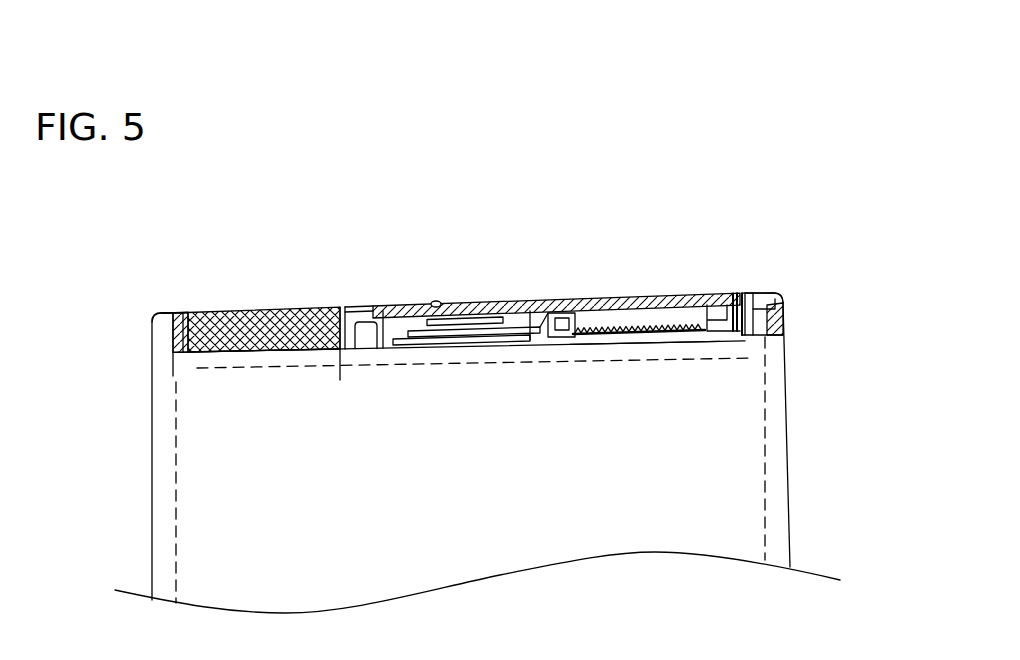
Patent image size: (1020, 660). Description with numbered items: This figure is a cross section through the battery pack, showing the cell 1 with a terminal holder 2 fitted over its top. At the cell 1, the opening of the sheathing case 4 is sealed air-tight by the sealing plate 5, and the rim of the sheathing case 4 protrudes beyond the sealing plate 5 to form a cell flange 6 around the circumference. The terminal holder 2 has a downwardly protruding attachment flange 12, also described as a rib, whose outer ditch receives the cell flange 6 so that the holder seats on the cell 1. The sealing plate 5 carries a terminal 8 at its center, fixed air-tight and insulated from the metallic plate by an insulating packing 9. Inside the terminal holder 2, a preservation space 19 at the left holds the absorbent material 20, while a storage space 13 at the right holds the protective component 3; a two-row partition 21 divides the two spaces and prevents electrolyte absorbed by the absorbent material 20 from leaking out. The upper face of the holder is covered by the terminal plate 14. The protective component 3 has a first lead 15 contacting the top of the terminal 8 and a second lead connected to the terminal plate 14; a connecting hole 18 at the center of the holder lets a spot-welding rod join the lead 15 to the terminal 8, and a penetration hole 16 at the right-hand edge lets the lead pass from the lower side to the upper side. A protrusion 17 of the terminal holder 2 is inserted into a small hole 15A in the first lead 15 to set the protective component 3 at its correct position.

The cell 1 is at (826, 476).
The terminal holder 2 is at (610, 300).
The protective component 3 is at (630, 341).
The sheathing case 4 is at (789, 436).
The sealing plate 5 is at (310, 309).
The cell flange 6 is at (160, 346).
The terminal 8 is at (483, 306).
The insulating packing 9 is at (420, 352).
The attachment flange 12 is at (185, 355).
The storage space 13 is at (735, 337).
The terminal plate 14 is at (542, 300).
The lead 15 is at (733, 297).
The small hole 15A is at (537, 350).
The penetration hole 16 is at (760, 297).
The protrusion 17 is at (548, 340).
The connecting hole 18 is at (461, 284).
The preservation space 19 is at (172, 314).
The absorbent material 20 is at (260, 353).
The partition 21 is at (368, 352).